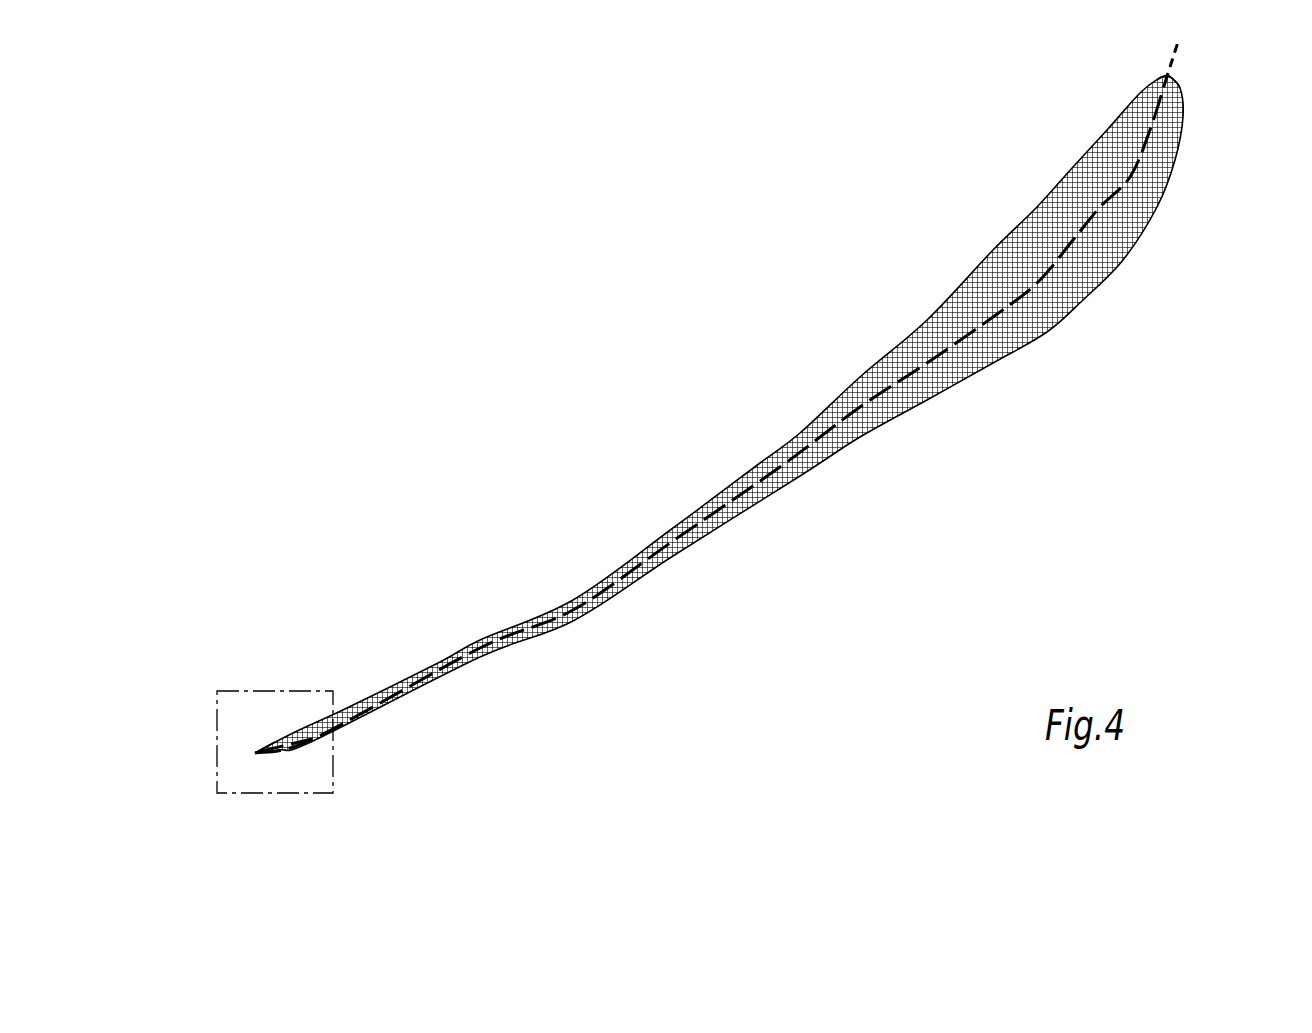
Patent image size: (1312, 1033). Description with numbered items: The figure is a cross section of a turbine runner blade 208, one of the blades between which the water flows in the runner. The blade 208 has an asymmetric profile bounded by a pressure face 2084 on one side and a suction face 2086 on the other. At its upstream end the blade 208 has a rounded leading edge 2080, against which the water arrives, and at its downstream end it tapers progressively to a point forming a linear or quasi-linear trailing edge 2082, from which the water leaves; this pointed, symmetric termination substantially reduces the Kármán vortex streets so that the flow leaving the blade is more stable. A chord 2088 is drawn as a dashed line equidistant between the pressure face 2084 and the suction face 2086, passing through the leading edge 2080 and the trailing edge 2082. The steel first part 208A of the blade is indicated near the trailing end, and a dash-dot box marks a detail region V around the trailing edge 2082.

The blade 208 is at (603, 333).
The first part 208A is at (313, 727).
The leading edge 2080 is at (1178, 70).
The trailing edge 2082 is at (237, 755).
The pressure face 2084 is at (915, 326).
The suction face 2086 is at (1054, 342).
The chord 2088 is at (1073, 240).
The vertex region V is at (333, 763).